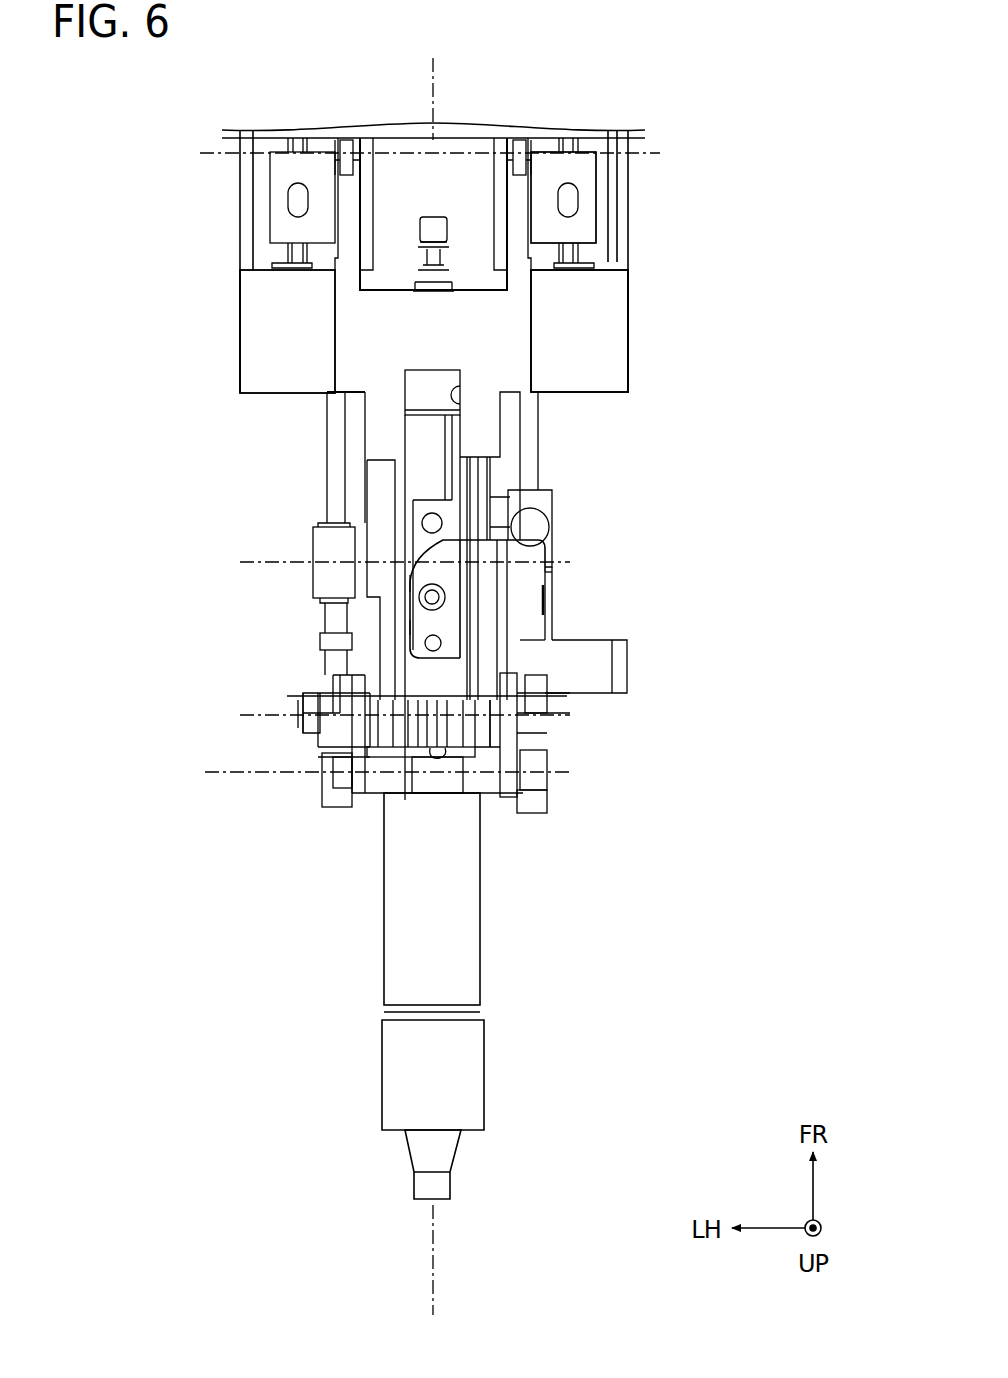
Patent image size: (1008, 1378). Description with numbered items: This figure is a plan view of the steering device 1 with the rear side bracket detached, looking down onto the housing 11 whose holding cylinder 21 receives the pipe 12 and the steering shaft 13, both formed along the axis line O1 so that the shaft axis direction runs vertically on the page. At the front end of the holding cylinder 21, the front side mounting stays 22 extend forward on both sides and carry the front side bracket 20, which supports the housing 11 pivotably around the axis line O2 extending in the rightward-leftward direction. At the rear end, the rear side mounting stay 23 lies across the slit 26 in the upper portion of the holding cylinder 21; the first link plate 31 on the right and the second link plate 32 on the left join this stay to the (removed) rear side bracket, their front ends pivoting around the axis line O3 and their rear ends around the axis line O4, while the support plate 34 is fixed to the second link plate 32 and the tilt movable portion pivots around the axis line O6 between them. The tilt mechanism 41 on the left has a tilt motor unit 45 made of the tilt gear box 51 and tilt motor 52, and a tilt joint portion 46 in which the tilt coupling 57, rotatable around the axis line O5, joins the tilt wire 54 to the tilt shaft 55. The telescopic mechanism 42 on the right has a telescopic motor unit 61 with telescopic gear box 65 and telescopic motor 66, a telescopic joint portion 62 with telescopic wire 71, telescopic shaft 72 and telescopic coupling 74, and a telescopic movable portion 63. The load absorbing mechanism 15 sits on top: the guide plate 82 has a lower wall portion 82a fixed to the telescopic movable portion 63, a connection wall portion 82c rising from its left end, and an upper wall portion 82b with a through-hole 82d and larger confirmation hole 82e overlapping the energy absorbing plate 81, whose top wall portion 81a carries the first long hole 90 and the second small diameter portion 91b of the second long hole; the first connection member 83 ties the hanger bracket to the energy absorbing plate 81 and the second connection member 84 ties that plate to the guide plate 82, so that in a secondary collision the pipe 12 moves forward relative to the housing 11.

The steering device 1 is at (750, 112).
The housing 11 is at (540, 333).
The pipe 12 is at (484, 950).
The steering shaft 13 is at (460, 1160).
The load absorbing mechanism 15 is at (479, 526).
The front side bracket 20 is at (585, 172).
The holding cylinder 21 is at (383, 421).
The front side mounting stay 22 is at (512, 150).
The rear side mounting stay 23 is at (497, 760).
The slit 26 is at (465, 403).
The first link plate 31 is at (546, 758).
The second link plate 32 is at (229, 759).
The support plate 34 is at (305, 722).
The tilt mechanism 41 is at (238, 338).
The telescopic mechanism 42 is at (634, 372).
The tilt motor unit 45 is at (194, 265).
The tilt joint portion 46 is at (183, 533).
The tilt gear box 51 is at (241, 300).
The tilt motor 52 is at (262, 203).
The tilt wire 54 is at (325, 491).
The tilt shaft 55 is at (313, 670).
The tilt coupling 57 is at (323, 610).
The telescopic motor unit 61 is at (680, 265).
The telescopic joint portion 62 is at (691, 597).
The telescopic movable portion 63 is at (627, 680).
The telescopic gear box 65 is at (628, 303).
The telescopic motor 66 is at (628, 225).
The telescopic wire 71 is at (555, 498).
The telescopic shaft 72 is at (548, 800).
The telescopic coupling 74 is at (554, 518).
The energy absorbing plate 81 is at (338, 552).
The top wall portion 81a is at (441, 506).
The guide plate 82 is at (474, 717).
The lower wall portion 82a is at (605, 665).
The upper wall portion 82b is at (408, 627).
The connection wall portion 82c is at (548, 600).
The through-hole 82d is at (433, 651).
The confirmation hole 82e is at (408, 582).
The first connection member 83 is at (446, 590).
The second connection member 84 is at (548, 626).
The first long hole 90 is at (425, 530).
The second small diameter portion 91b is at (435, 752).
The axis line O1 is at (437, 1262).
The axis line O2 is at (205, 151).
The axis line O3 is at (288, 694).
The axis line O4 is at (242, 770).
The axis line O5 is at (283, 560).
The axis line O6 is at (280, 713).